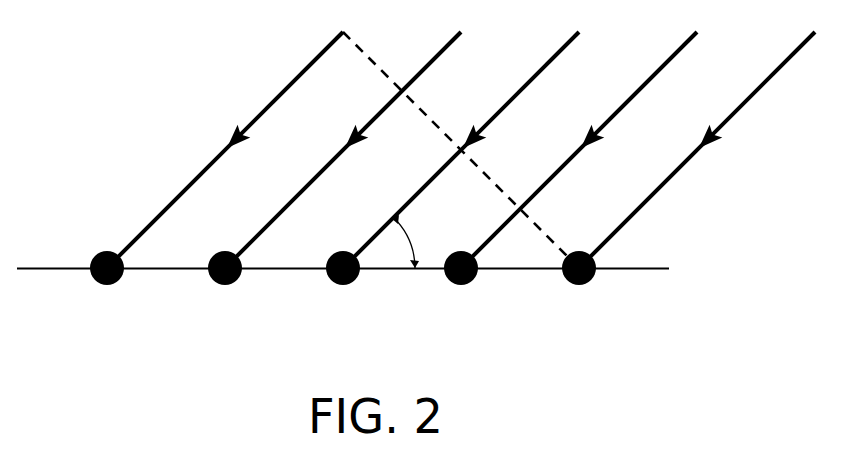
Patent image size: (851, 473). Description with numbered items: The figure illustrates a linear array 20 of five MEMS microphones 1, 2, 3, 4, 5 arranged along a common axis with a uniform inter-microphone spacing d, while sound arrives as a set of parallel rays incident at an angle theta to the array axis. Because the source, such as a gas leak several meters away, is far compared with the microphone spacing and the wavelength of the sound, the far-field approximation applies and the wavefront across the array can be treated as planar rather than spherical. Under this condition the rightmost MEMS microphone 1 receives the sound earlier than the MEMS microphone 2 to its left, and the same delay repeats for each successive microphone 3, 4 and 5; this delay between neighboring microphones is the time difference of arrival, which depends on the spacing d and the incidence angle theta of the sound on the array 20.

The linear array 20 is at (107, 85).
The MEMS microphone 1 is at (579, 284).
The MEMS microphone 2 is at (461, 284).
The MEMS microphone 3 is at (343, 284).
The MEMS microphone 4 is at (225, 284).
The MEMS microphone 5 is at (107, 284).